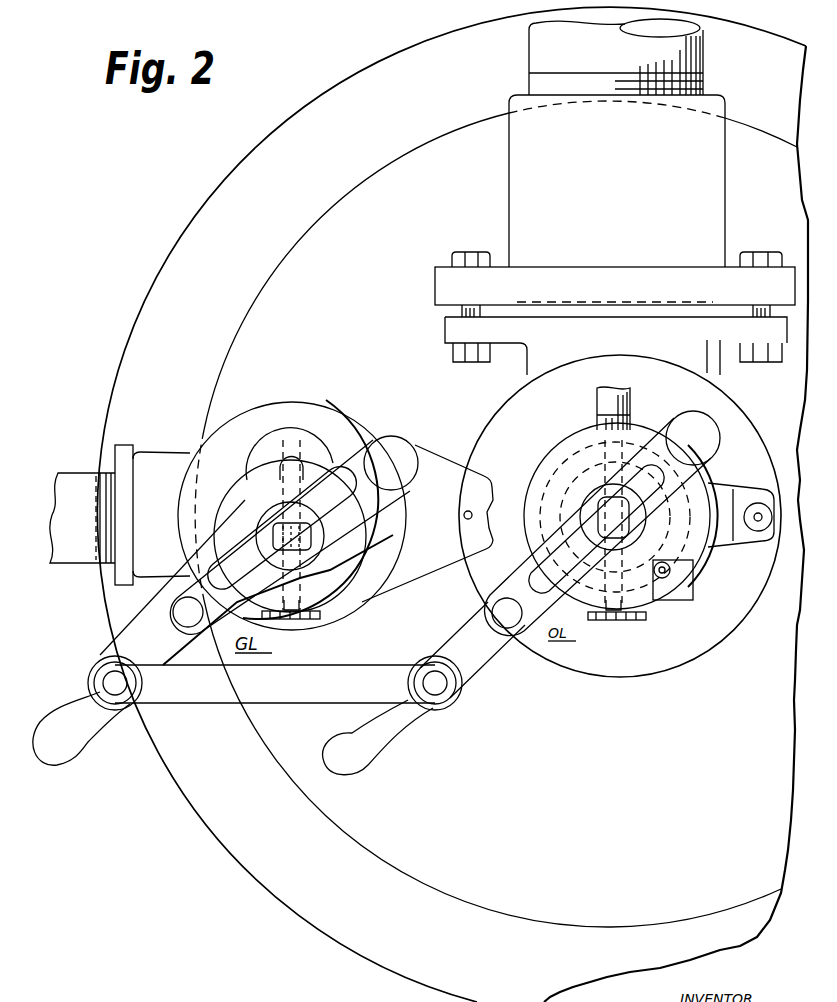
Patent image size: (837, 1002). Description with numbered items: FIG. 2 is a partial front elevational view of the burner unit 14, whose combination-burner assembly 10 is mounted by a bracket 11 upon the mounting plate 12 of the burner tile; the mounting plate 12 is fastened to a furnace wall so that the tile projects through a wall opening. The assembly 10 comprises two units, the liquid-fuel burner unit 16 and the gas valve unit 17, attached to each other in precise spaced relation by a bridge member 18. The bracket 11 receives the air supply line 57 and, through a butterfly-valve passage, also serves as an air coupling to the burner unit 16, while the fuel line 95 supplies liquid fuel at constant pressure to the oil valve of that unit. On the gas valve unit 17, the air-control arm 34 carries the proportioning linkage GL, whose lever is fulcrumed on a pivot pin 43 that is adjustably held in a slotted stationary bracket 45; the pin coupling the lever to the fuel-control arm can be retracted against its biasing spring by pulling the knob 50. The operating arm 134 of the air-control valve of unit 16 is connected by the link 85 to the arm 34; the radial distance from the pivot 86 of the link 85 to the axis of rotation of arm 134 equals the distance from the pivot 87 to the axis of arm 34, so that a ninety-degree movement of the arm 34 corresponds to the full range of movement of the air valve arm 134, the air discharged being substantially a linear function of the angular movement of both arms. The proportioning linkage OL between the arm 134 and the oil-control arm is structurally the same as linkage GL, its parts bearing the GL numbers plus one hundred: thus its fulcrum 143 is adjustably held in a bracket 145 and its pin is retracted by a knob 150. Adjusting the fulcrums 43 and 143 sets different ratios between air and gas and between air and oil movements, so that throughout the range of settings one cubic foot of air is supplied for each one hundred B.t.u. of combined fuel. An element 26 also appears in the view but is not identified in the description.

The combination-burner assembly 10 is at (515, 417).
The bracket 11 is at (435, 284).
The mounting plate 12 is at (130, 331).
The burner unit 14 is at (198, 889).
The liquid-fuel burner unit 16 is at (682, 407).
The gas valve unit 17 is at (368, 389).
The bridge member 18 is at (443, 575).
The shaft 26 is at (80, 473).
The air-control arm 34 is at (153, 628).
The pivot pin 43 is at (275, 513).
The slotted stationary bracket 45 is at (281, 437).
The knob 50 is at (412, 477).
The air supply line 57 is at (703, 55).
The link 85 is at (325, 703).
The pivot 86 is at (440, 690).
The pivot 87 is at (110, 683).
The fuel line 95 is at (597, 402).
The air-control arm 134 is at (478, 663).
The fulcrum 143 is at (640, 530).
The slotted stationary bracket 145 is at (673, 593).
The knob 150 is at (702, 440).